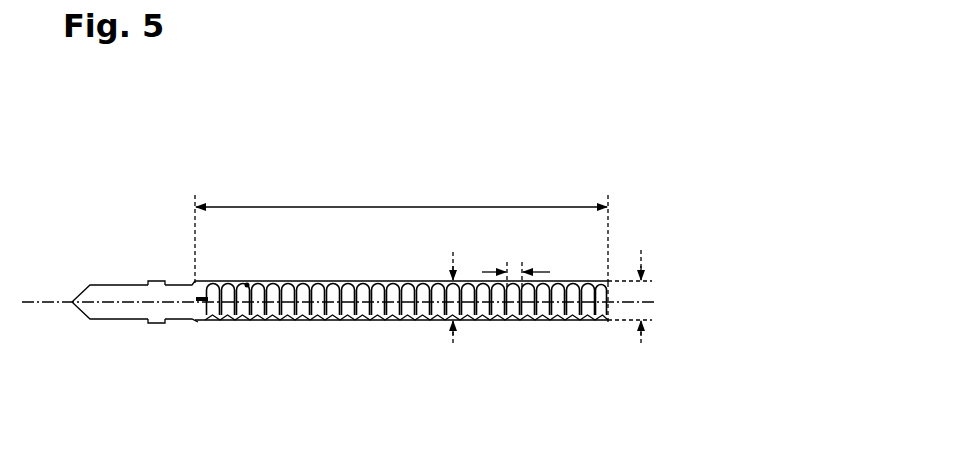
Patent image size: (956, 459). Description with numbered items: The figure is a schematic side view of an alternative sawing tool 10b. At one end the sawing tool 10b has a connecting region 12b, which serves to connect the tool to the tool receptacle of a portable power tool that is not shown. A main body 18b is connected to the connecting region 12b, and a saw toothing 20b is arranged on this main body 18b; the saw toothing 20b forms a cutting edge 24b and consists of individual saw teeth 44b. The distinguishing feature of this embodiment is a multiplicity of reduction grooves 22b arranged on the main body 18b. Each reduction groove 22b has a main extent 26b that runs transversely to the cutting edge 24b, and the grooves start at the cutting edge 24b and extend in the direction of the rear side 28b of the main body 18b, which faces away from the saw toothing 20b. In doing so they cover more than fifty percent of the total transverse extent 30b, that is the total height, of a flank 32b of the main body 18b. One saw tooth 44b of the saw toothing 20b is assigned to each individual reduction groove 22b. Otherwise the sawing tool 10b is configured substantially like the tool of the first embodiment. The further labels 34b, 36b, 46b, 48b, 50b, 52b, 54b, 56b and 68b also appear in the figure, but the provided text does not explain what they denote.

The sawing tool 10b is at (86, 168).
The connecting region 12b is at (101, 277).
The main body 18b is at (187, 278).
The saw toothing 20b is at (235, 319).
The reduction grooves 22b is at (393, 280).
The cutting edge 24b is at (628, 323).
The main extent 26b is at (457, 281).
The rear side 28b is at (283, 280).
The total transverse extent 30b is at (645, 299).
The flank 32b is at (332, 280).
The thread root 34b is at (420, 321).
The thread groove 36b is at (324, 321).
The saw tooth 44b is at (281, 321).
The thread tooth flank 46b is at (368, 321).
The thread length 48b is at (404, 205).
The thread pitch 50b is at (518, 268).
The thread start point 52b is at (246, 281).
The end face 54b is at (615, 272).
The longitudinal axis 56b is at (46, 305).
The thread profile 68b is at (413, 280).